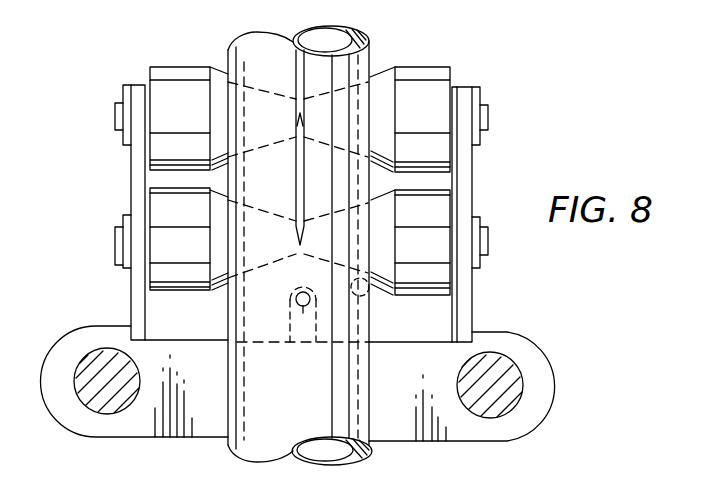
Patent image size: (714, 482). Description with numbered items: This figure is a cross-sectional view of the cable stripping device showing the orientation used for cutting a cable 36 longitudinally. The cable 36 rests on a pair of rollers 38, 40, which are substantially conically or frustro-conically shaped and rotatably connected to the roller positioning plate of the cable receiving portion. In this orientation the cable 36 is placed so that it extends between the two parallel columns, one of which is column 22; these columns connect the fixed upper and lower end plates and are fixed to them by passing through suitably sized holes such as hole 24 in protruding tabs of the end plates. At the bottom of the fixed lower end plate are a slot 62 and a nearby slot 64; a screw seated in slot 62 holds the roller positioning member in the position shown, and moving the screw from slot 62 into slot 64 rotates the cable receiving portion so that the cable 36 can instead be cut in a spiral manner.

The column 22 is at (92, 350).
The hole 24 is at (508, 360).
The cable 36 is at (370, 48).
The roller 38 is at (153, 67).
The roller 40 is at (443, 67).
The slot 62 is at (294, 345).
The slot 64 is at (367, 293).